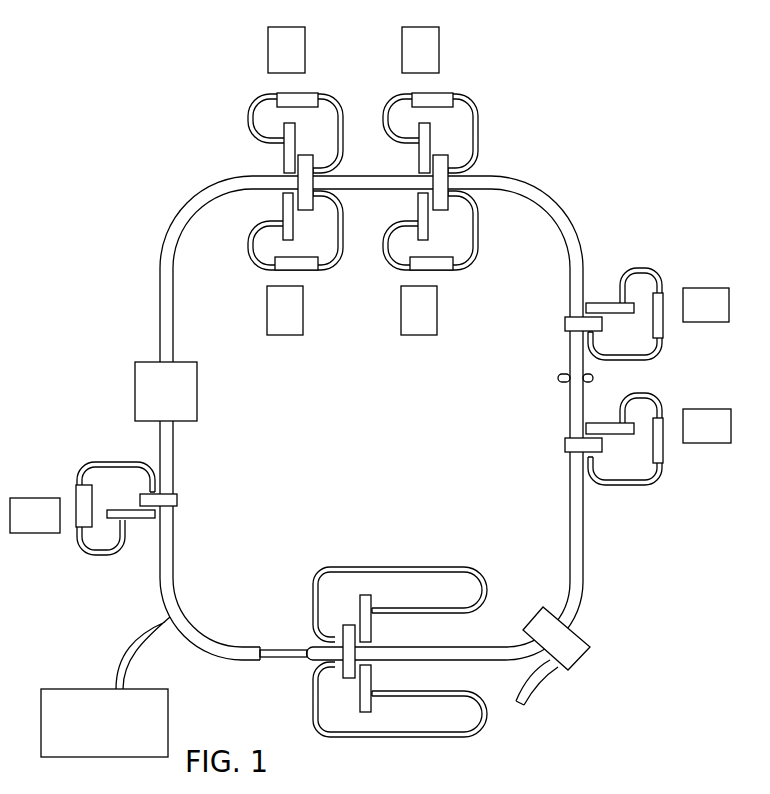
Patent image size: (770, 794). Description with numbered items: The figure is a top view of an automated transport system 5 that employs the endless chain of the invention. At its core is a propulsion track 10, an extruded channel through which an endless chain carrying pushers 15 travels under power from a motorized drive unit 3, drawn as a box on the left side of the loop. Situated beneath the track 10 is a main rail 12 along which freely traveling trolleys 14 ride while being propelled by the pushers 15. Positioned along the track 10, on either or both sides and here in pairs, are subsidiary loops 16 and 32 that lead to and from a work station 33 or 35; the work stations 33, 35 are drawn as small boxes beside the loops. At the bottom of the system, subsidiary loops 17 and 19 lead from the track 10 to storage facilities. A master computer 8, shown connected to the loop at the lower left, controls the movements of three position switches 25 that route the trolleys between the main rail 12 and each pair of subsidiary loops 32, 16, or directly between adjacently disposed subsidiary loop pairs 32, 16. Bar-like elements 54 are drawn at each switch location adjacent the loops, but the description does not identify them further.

The motorized drive unit 3 is at (197, 389).
The automated transport system 5 is at (370, 384).
The master computer 8 is at (169, 705).
The propulsion track 10 is at (160, 296).
The main rail 12 is at (283, 660).
The trolley 14 is at (593, 378).
The pusher 15 is at (558, 378).
The subsidiary loop 16 is at (340, 93).
The subsidiary loop 17 is at (436, 568).
The subsidiary loop 19 is at (457, 740).
The position switch 25 is at (300, 203).
The subsidiary loop 32 is at (330, 261).
The work station 33 is at (703, 288).
The work station 35 is at (293, 27).
The transfer arm 54 is at (295, 143).